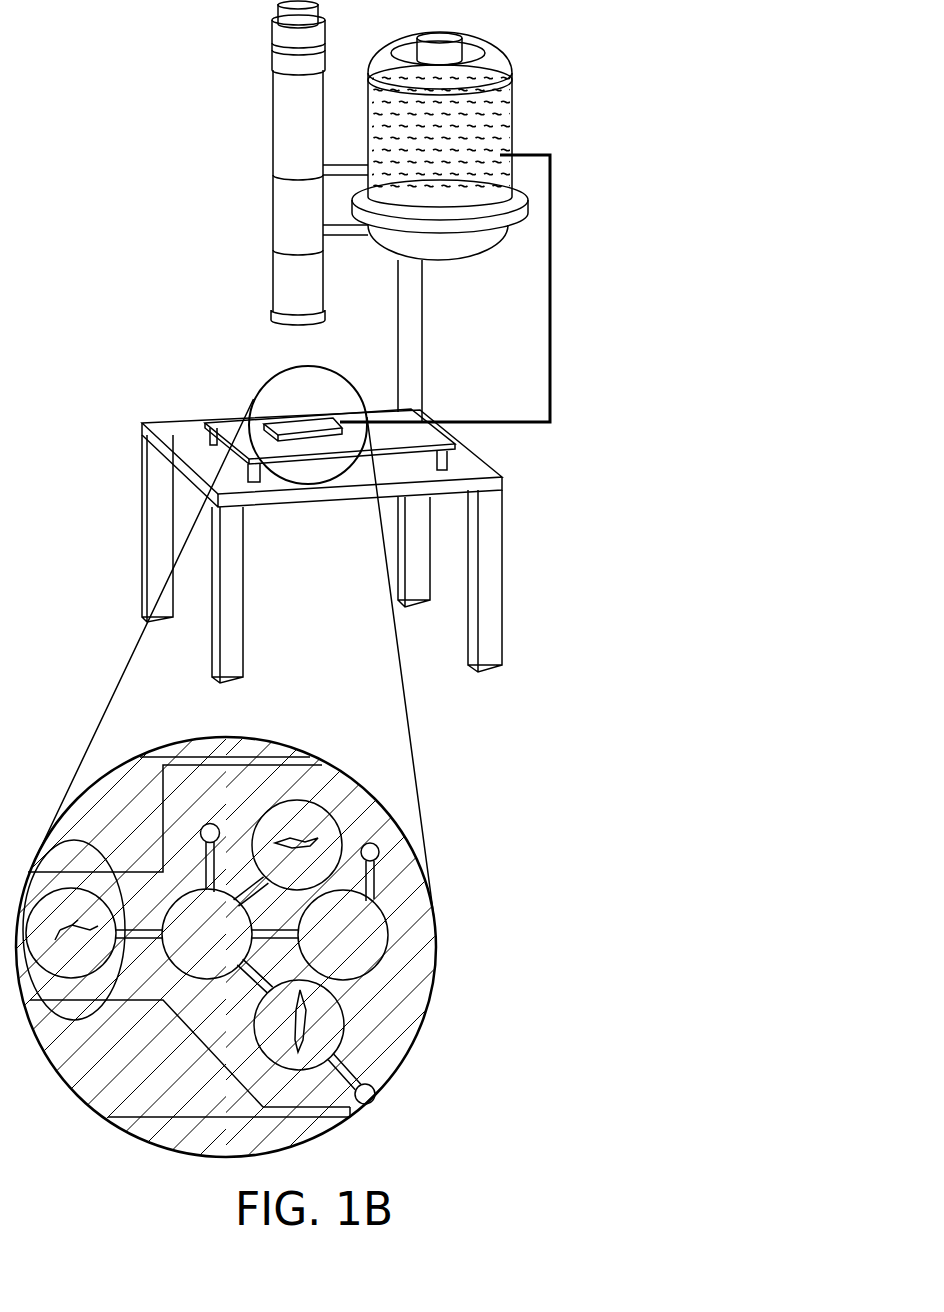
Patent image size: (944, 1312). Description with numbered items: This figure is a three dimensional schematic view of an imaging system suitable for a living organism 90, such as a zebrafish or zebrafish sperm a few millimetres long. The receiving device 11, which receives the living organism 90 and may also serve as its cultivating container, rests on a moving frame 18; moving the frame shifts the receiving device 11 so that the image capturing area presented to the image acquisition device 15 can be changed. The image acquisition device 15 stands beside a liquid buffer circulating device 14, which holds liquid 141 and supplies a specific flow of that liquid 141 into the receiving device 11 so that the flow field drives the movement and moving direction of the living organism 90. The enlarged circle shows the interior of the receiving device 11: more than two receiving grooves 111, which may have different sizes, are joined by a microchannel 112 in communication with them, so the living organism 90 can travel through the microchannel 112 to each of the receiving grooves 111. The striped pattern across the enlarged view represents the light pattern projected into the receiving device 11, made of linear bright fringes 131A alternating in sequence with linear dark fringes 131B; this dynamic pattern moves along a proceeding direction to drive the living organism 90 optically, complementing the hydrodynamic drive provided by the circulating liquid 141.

The liquid buffer circulating device 14 is at (507, 68).
The liquid 141 is at (502, 118).
The image acquisition device 15 is at (290, 276).
The receiving device 11 is at (293, 420).
The moving frame 18 is at (209, 441).
The linear bright fringes 131A is at (257, 737).
The linear dark fringes 131B is at (283, 757).
The receiving grooves 111 is at (423, 958).
The microchannel 112 is at (400, 1040).
The living organism 90 is at (376, 1094).